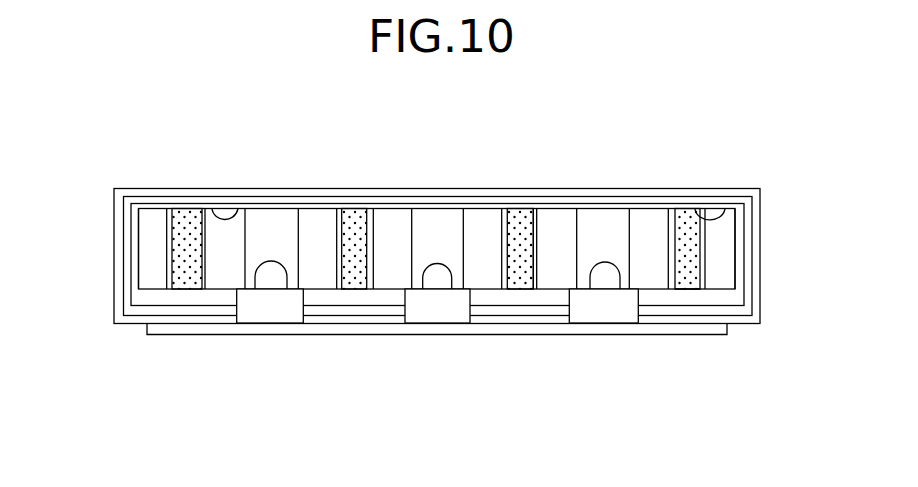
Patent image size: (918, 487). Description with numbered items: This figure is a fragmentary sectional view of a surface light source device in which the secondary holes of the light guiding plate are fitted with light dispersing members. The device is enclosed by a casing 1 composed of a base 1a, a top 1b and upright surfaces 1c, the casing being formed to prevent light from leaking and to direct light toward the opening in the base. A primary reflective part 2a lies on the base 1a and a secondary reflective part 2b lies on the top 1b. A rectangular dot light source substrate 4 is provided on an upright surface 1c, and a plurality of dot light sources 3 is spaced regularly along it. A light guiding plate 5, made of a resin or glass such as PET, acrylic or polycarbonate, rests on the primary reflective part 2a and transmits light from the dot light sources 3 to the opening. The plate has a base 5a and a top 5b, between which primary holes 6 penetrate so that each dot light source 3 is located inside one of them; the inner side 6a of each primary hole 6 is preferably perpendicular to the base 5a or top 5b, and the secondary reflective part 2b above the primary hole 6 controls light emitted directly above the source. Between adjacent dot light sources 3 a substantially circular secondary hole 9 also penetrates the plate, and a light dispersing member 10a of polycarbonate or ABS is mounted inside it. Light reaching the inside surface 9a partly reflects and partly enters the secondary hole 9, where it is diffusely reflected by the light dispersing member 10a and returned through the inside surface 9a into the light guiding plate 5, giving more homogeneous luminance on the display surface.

The casing 1 is at (735, 197).
The base 1a is at (303, 309).
The top 1b is at (213, 214).
The upright surface 1c is at (124, 253).
The primary reflective part 2a is at (390, 303).
The secondary reflective part 2b is at (357, 206).
The dot light source 3 is at (602, 281).
The dot light source substrate 4 is at (535, 330).
The light guiding plate 5 is at (648, 224).
The base of the light guiding plate 5a is at (722, 287).
The top of the light guiding plate 5b is at (697, 214).
The primary hole 6 is at (270, 224).
The inner side of the primary hole 6a is at (293, 230).
The secondary hole 9 is at (505, 209).
The inside surface of the secondary hole 9a is at (530, 218).
The light dispersing member 10a is at (689, 286).